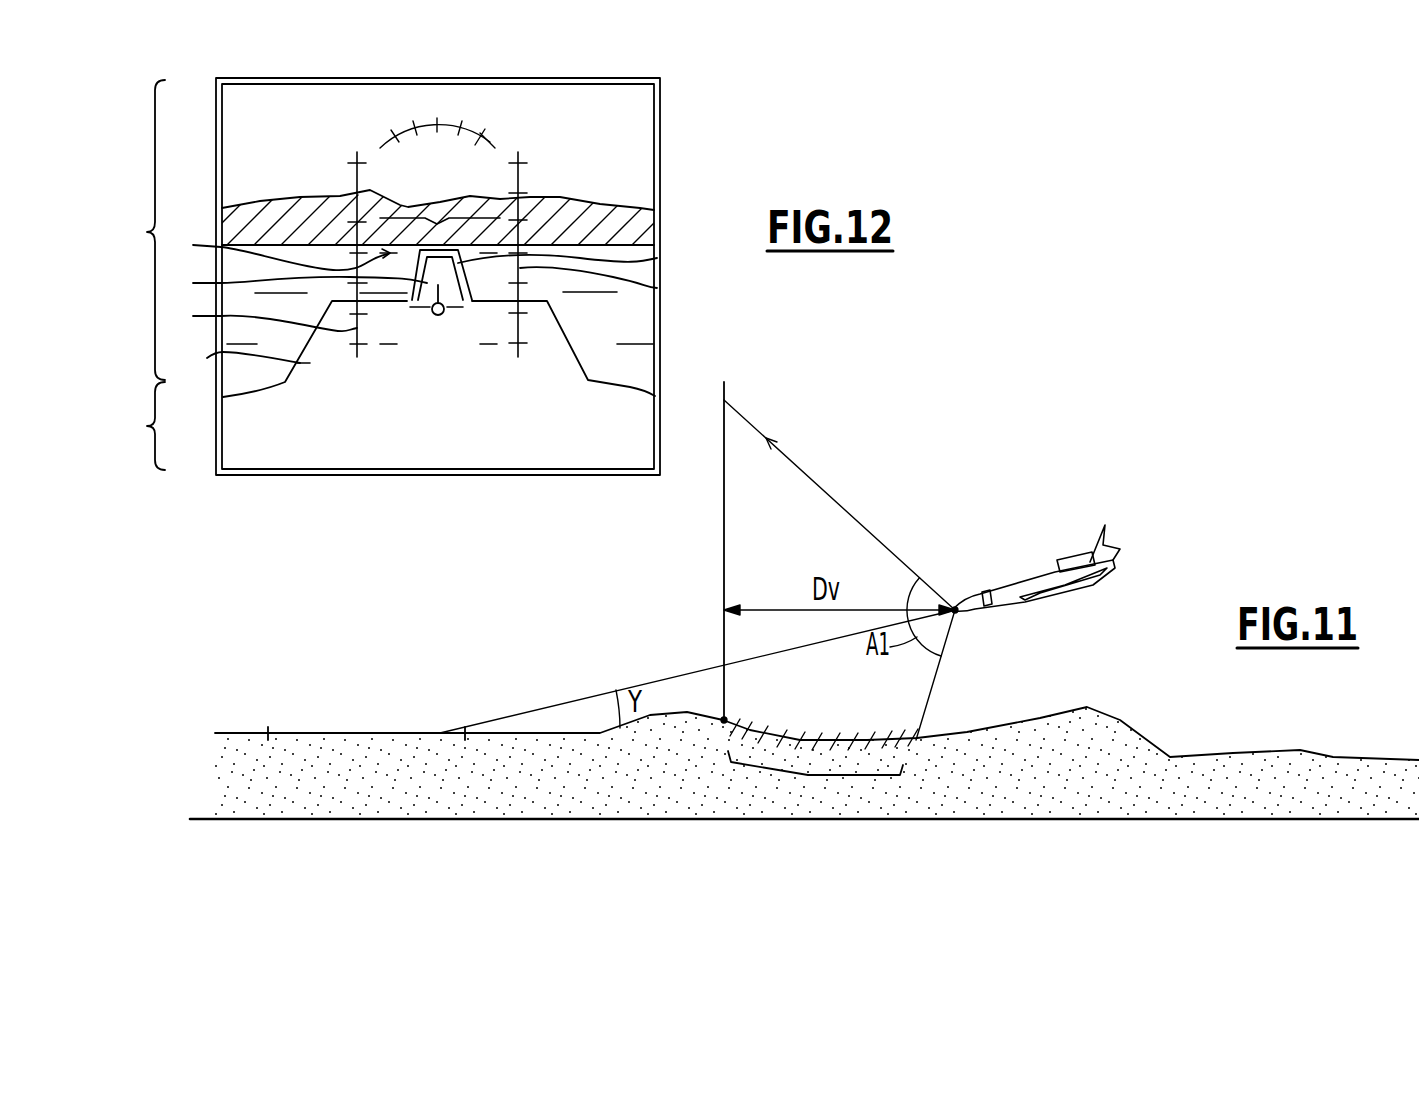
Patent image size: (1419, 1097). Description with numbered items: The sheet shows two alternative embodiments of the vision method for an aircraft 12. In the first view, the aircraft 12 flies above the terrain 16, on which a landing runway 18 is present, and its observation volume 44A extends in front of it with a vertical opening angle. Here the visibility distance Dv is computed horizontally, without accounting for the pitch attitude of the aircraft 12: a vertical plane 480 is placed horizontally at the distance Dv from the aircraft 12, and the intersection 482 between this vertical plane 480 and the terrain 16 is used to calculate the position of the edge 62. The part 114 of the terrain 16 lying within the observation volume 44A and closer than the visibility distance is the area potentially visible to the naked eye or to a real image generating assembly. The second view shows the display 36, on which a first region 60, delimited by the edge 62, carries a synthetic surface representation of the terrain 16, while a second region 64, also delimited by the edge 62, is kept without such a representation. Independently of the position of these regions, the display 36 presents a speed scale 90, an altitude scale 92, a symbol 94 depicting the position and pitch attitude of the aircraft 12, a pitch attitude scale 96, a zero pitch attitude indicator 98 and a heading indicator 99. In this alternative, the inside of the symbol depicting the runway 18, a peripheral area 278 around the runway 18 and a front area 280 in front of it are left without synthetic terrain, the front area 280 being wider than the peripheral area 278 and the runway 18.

In FIG. 11, the aircraft 12 is at (1061, 540).
In FIG. 11, the terrain 16 is at (582, 732).
In FIG. 12, the landing runway 18 is at (297, 281).
In FIG. 11, the landing runway 18 is at (340, 731).
In FIG. 12, the display 36 is at (672, 151).
In FIG. 11, the observation volume 44A is at (913, 680).
In FIG. 12, the first region 60 is at (138, 230).
In FIG. 12, the edge 62 is at (627, 387).
In FIG. 12, the second region 64 is at (138, 426).
In FIG. 12, the speed scale 90 is at (262, 315).
In FIG. 12, the altitude scale 92 is at (657, 288).
In FIG. 12, the symbol representing the position of the aircraft and its pitch attitude 94 is at (457, 305).
In FIG. 12, the pitch attitude scale 96 is at (278, 247).
In FIG. 12, the zero pitch attitude indicator 98 is at (403, 207).
In FIG. 12, the heading indicator 99 is at (485, 137).
In FIG. 11, the part of the terrain 114 is at (820, 773).
In FIG. 12, the peripheral area 278 is at (657, 258).
In FIG. 12, the front area 280 is at (233, 364).
In FIG. 11, the vertical plane 480 is at (723, 580).
In FIG. 11, the intersection 482 is at (723, 720).